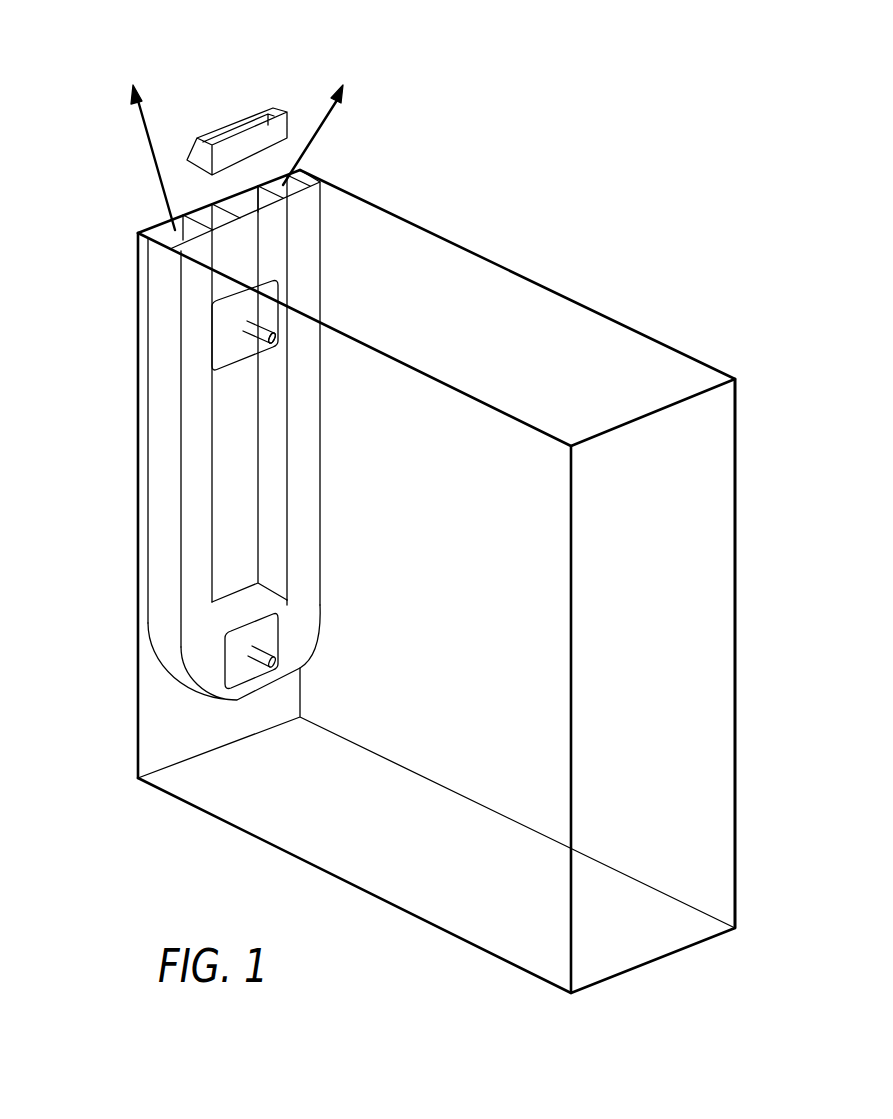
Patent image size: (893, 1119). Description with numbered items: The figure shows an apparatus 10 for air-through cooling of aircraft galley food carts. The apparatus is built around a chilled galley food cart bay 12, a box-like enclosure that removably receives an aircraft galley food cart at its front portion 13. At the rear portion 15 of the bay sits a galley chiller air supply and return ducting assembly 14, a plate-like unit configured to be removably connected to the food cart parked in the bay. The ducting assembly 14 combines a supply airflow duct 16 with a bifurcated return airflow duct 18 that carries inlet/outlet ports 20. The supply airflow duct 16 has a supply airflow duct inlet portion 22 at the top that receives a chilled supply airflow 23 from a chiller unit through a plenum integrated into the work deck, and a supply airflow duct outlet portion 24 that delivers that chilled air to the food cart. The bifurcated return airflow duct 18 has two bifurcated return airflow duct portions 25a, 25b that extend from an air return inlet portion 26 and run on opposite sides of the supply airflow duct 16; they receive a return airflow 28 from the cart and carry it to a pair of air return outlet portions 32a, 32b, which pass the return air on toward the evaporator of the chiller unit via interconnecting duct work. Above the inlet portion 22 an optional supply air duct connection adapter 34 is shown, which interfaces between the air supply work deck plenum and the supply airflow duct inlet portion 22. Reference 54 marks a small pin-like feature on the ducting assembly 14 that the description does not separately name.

The apparatus 10 is at (522, 172).
The chilled galley food cart bay 12 is at (538, 313).
The front portion 13 is at (736, 863).
The galley chiller air supply and return ducting assembly 14 is at (170, 551).
The rear portion 15 is at (137, 738).
The supply airflow duct 16 is at (267, 262).
The bifurcated return airflow duct 18 is at (313, 228).
The inlet/outlet ports 20 is at (240, 333).
The supply airflow duct inlet portion 22 is at (208, 217).
The chilled supply airflow 23 is at (255, 143).
The supply airflow duct outlet portion 24 is at (223, 322).
The bifurcated return airflow duct portion 25a is at (197, 596).
The bifurcated return airflow duct portion 25b is at (307, 459).
The air return inlet portion 26 is at (243, 677).
The return airflow 28 is at (167, 205).
The air return outlet portion 32a is at (157, 231).
The air return outlet portion 32b is at (305, 173).
The supply air duct connection adapter 34 is at (203, 153).
The pin tip 54 is at (262, 333).